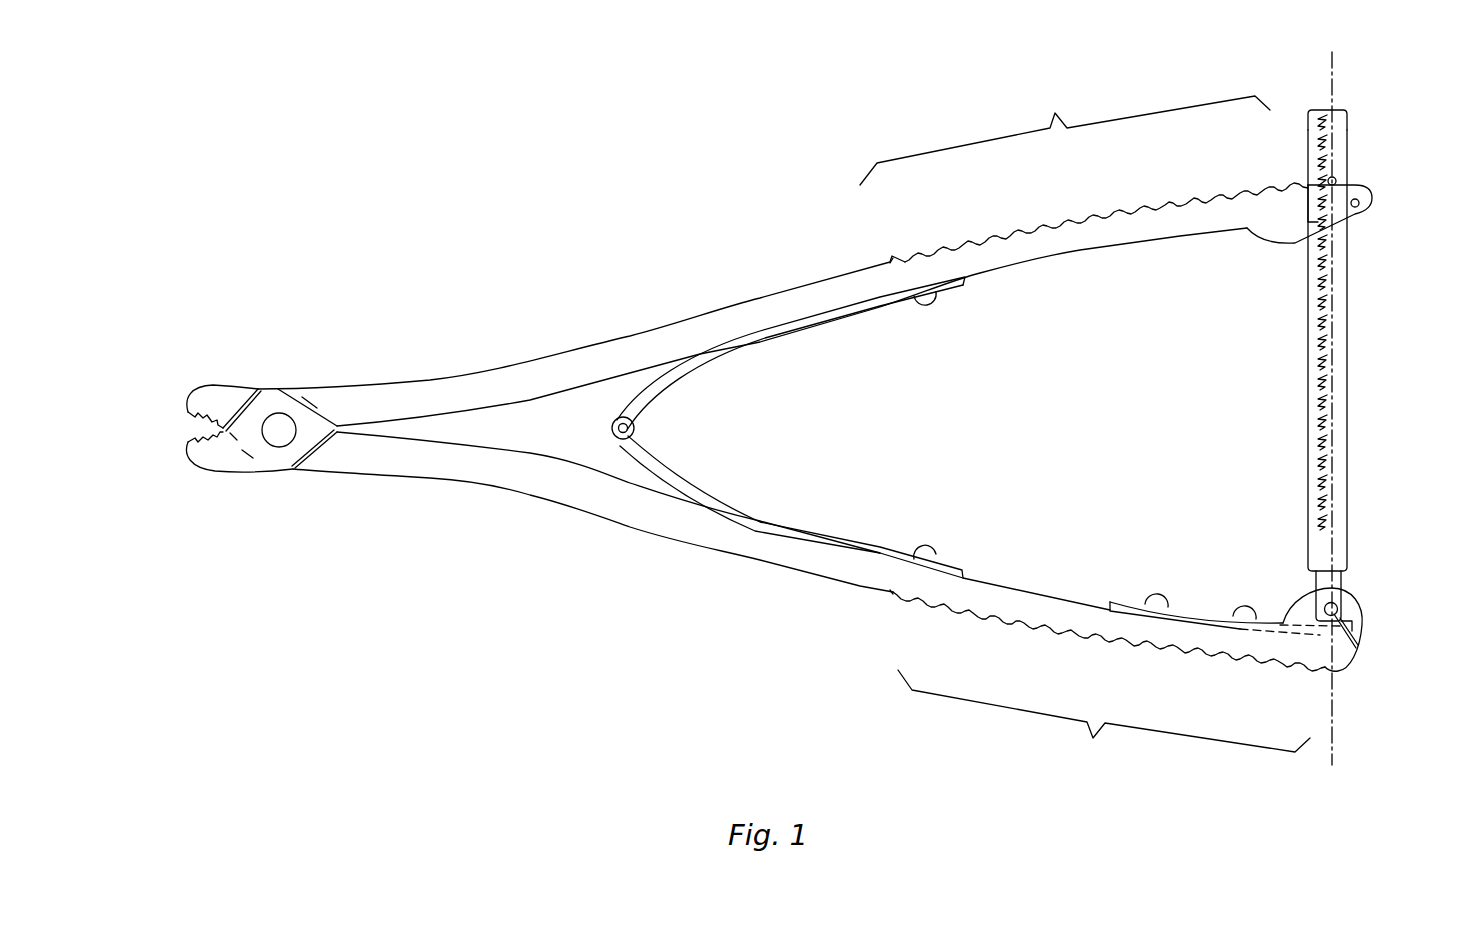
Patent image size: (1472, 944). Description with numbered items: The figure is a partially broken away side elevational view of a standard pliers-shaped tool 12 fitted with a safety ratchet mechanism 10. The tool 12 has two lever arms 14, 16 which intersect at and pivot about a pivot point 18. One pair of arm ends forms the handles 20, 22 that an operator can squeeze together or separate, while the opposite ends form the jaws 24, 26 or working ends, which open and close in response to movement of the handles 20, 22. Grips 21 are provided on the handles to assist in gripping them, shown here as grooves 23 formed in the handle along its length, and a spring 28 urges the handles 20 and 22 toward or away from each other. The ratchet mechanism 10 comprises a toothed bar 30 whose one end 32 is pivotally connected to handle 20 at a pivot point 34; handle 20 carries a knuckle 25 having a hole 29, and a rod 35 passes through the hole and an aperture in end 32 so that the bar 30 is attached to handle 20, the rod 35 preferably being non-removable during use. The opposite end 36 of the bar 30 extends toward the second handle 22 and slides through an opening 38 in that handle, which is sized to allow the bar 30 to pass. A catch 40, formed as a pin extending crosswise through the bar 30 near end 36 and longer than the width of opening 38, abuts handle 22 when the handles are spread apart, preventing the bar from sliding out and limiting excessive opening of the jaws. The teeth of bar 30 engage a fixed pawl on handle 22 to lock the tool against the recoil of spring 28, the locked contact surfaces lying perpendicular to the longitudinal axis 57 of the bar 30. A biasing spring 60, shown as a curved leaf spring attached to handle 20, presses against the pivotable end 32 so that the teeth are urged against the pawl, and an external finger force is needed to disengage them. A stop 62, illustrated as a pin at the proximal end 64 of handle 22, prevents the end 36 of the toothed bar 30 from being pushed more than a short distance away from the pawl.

The ratchet mechanism 10 is at (1258, 348).
The pliers-shaped tool 12 is at (783, 593).
The lever arm 14 is at (403, 480).
The lever arm 16 is at (418, 378).
The pivot point 18 is at (282, 437).
The handle 20 is at (1153, 653).
The grips 21 is at (1085, 428).
The handle 22 is at (1062, 215).
The grooves 23 is at (905, 260).
The jaw 24 is at (213, 382).
The knuckle 25 is at (1302, 592).
The jaw 26 is at (227, 477).
The spring 28 is at (680, 476).
The hole 29 is at (1362, 630).
The toothed bar 30 is at (1316, 433).
The end of toothed bar 32 is at (1345, 584).
The pivot point 34 is at (1353, 640).
The rod 35 is at (1352, 606).
The opposite end of bar 36 is at (1328, 108).
The opening 38 is at (1301, 183).
The catch 40 is at (1334, 177).
The longitudinal axis 57 is at (1332, 737).
The biasing spring 60 is at (1258, 612).
The stop 62 is at (1357, 207).
The proximal end of handle 64 is at (1364, 197).